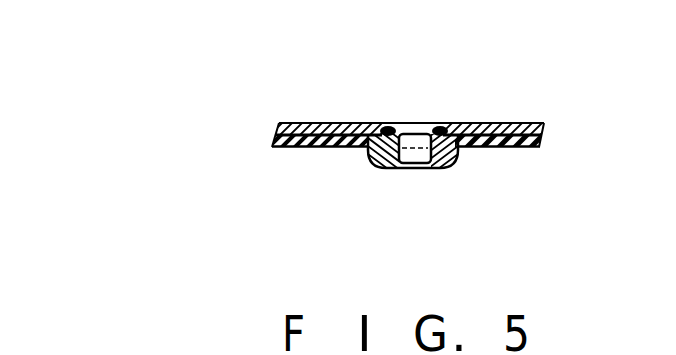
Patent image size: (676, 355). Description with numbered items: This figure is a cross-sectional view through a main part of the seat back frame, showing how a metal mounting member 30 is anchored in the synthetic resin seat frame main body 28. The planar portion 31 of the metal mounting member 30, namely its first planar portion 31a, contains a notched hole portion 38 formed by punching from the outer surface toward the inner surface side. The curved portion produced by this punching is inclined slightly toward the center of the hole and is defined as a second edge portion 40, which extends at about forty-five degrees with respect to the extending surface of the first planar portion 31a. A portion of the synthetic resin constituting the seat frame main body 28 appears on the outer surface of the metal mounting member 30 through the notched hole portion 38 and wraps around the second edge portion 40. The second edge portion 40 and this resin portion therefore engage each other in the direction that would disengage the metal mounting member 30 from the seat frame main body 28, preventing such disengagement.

The metal mounting member 30 is at (503, 116).
The planar portion 31 is at (398, 93).
The first planar portion 31a is at (313, 121).
The seat frame main body 28 is at (342, 147).
The notched hole portion 38 is at (384, 121).
The second edge portion 40 is at (450, 121).